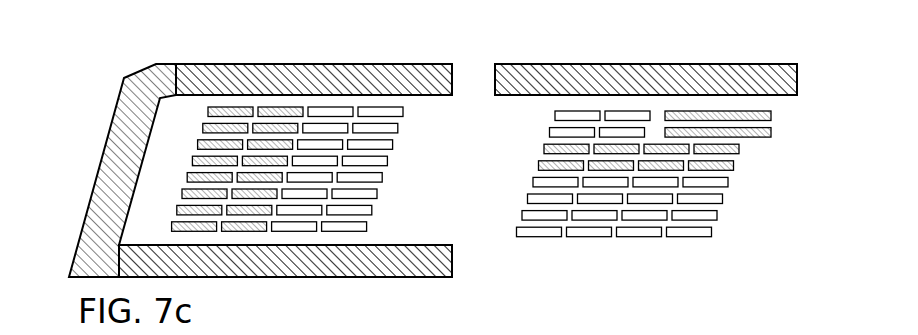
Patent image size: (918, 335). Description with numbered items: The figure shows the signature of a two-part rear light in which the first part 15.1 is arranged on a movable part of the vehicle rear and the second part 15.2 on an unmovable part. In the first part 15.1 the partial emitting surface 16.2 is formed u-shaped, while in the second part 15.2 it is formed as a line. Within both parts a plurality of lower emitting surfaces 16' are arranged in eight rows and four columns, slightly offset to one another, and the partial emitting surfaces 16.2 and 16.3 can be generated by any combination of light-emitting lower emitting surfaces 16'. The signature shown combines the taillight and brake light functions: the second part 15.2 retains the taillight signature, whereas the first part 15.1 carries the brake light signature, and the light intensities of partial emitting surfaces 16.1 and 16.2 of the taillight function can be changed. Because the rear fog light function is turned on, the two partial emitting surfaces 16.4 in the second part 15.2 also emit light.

The first part 15.1 is at (120, 63).
The second part 15.2 is at (543, 62).
The partial emitting surface 16.1 is at (540, 156).
The partial emitting surface 16.2 is at (272, 82).
The partial emitting surface 16.3 is at (225, 240).
The partial emitting surfaces 16.4 is at (743, 133).
The lower emitting surfaces 16' is at (481, 174).